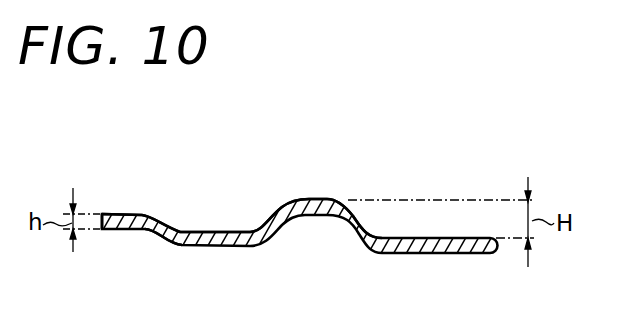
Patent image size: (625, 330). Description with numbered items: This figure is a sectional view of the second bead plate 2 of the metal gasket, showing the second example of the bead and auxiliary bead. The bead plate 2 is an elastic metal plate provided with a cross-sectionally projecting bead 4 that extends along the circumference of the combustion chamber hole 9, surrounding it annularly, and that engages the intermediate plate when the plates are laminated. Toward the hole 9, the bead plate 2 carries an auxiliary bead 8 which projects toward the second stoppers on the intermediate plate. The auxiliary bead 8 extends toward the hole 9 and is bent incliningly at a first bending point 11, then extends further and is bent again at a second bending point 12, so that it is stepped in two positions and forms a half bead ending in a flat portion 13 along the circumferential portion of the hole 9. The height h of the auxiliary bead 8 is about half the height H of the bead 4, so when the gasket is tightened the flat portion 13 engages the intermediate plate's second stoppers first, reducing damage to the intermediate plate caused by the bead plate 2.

The second bead plate 2 is at (435, 238).
The bead 4 is at (313, 205).
The auxiliary bead 8 is at (167, 238).
The combustion chamber hole 9 is at (98, 231).
The bending point 11 is at (192, 230).
The bending point 12 is at (152, 214).
The flat portion 13 is at (118, 214).